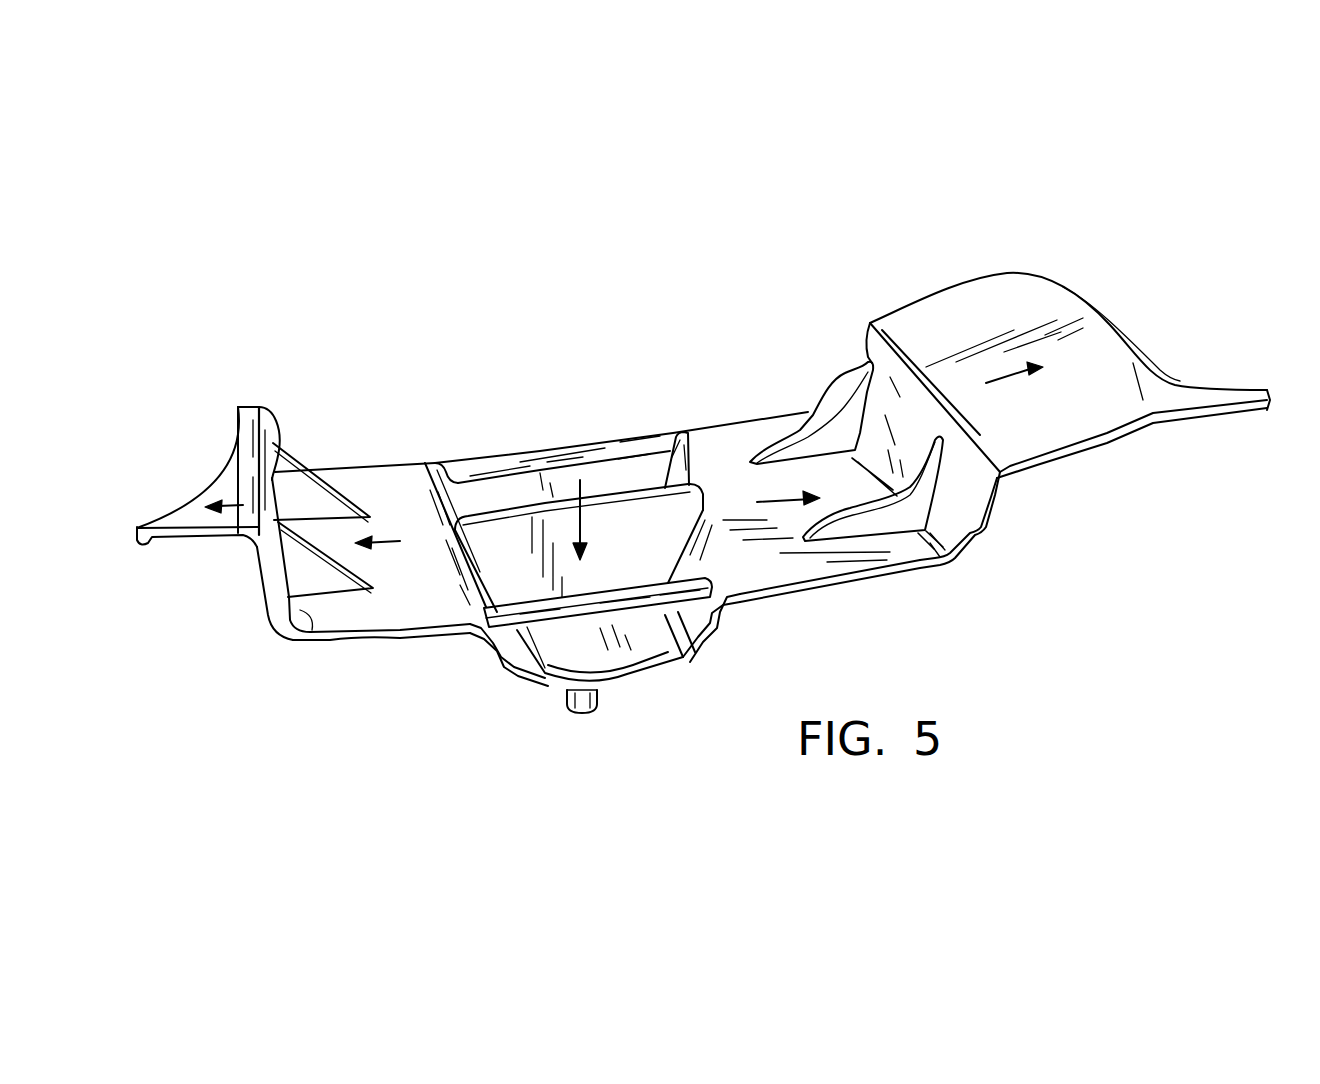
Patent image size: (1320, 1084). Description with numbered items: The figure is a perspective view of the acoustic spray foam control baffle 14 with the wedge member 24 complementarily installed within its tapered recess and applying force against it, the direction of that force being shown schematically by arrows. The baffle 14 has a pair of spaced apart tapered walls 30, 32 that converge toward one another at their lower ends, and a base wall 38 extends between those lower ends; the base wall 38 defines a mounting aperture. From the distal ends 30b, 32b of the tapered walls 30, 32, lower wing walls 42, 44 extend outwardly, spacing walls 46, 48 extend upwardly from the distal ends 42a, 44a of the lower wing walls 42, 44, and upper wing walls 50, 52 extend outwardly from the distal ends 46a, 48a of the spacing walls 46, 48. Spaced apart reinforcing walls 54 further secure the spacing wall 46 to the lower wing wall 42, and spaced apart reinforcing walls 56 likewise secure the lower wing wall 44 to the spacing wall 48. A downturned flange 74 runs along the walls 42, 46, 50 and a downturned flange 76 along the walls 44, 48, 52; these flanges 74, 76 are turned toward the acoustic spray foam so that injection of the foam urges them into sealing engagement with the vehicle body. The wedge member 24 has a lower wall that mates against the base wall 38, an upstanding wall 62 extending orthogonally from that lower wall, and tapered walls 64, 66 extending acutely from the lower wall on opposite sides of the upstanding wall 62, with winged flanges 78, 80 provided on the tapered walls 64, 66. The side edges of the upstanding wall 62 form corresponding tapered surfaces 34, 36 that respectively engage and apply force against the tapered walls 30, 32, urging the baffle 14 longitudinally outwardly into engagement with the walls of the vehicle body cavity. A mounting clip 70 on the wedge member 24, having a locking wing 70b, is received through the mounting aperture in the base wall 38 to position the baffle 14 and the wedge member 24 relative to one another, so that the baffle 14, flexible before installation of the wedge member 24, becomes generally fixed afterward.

The acoustic spray foam control baffle 14 is at (950, 272).
The wedge member 24 is at (632, 432).
The tapered wall 30 is at (483, 595).
The distal end of tapered wall 30b is at (442, 503).
The tapered wall 32 is at (690, 565).
The distal end of tapered wall 32b is at (690, 477).
The corresponding tapered surface 34 is at (488, 550).
The corresponding tapered surface 36 is at (677, 557).
The base wall 38 is at (608, 675).
The lower wing wall 42 is at (383, 615).
The distal end of lower wing wall 42a is at (312, 613).
The lower wing wall 44 is at (803, 573).
The distal end of lower wing wall 44a is at (918, 545).
The spacing wall 46 is at (267, 617).
The distal end of spacing wall 46a is at (273, 468).
The spacing wall 48 is at (963, 502).
The distal end of spacing wall 48a is at (868, 366).
The upper wing wall 50 is at (190, 520).
The upper wing wall 52 is at (1055, 427).
The reinforcing walls 54 is at (323, 578).
The reinforcing walls 56 is at (823, 452).
The upstanding wall 62 is at (613, 520).
The tapered wall 64 is at (486, 490).
The tapered wall 66 is at (557, 647).
The mounting clip 70 is at (568, 705).
The wing 70b is at (597, 705).
The downturned flange 74 is at (231, 438).
The downturned flange 76 is at (137, 547).
The winged flange 78 is at (517, 457).
The winged flange 80 is at (648, 595).